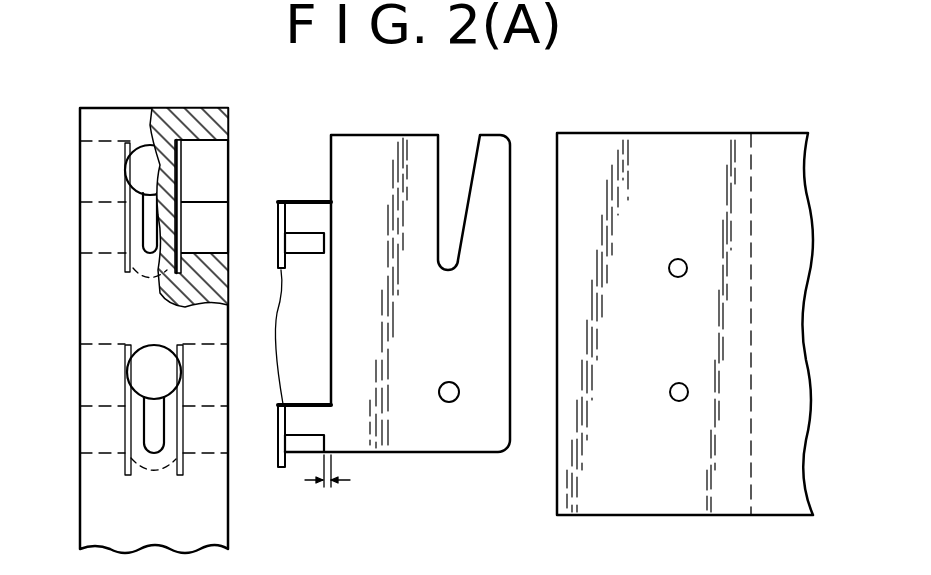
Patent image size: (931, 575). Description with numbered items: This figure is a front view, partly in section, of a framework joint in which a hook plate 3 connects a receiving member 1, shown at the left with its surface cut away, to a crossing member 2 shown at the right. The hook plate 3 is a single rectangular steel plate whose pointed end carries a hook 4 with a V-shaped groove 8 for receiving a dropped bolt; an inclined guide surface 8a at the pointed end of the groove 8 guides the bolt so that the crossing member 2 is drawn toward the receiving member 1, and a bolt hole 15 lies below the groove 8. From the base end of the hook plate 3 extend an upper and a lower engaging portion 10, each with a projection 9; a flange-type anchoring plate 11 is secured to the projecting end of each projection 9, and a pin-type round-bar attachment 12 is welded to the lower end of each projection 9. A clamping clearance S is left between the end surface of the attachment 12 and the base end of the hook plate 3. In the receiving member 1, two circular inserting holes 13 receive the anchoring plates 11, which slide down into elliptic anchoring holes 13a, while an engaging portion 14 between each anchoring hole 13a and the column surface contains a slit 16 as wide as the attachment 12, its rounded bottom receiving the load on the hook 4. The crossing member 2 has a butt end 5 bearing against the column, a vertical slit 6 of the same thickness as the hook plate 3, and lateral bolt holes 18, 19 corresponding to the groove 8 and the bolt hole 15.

The receiving member 1 is at (80, 125).
The crossing member 2 is at (778, 147).
The hook plate 3 is at (373, 133).
The hook 4 is at (493, 147).
The butt end 5 is at (558, 445).
The slit 6 is at (753, 458).
The V-shaped groove 8 is at (455, 182).
The inclined guide surface 8a is at (450, 247).
The projection 9 is at (307, 200).
The engaging portion 10 is at (283, 195).
The anchoring plate 11 is at (267, 337).
The attachment 12 is at (320, 437).
The inserting hole 13 is at (125, 170).
The anchoring hole 13a is at (200, 140).
The engaging portion 14 is at (207, 253).
The bolt hole 15 is at (449, 402).
The slit 16 is at (192, 223).
The bolt hole 18 is at (673, 259).
The bolt hole 19 is at (675, 401).
The clamping clearance S is at (327, 487).